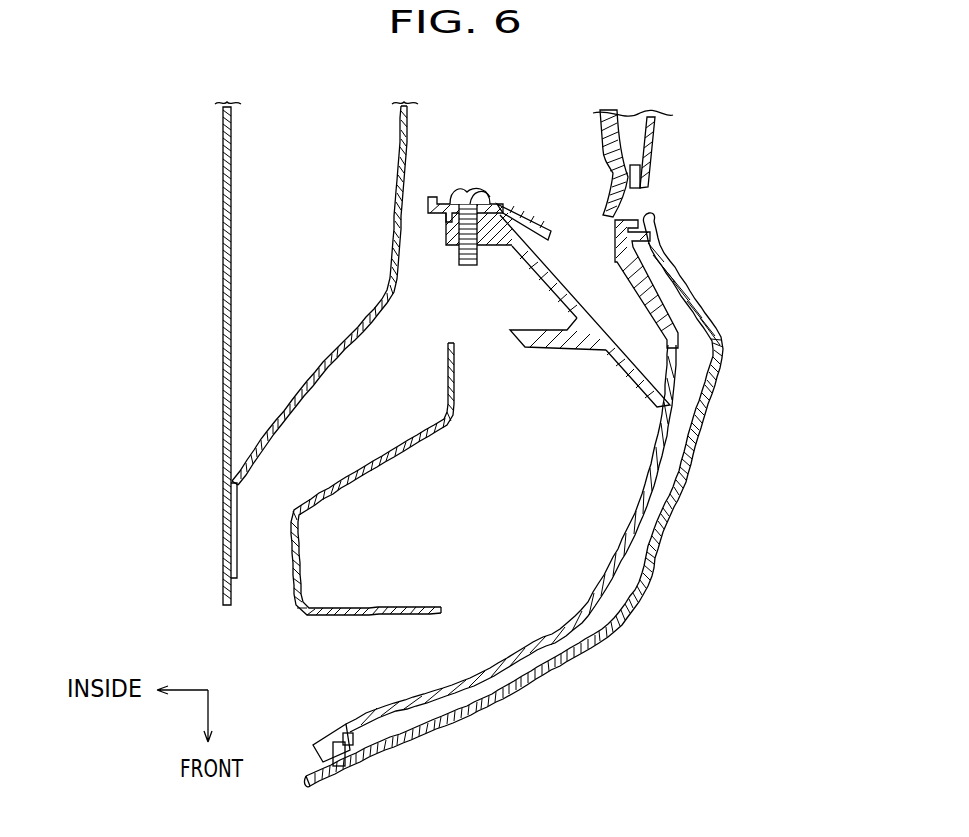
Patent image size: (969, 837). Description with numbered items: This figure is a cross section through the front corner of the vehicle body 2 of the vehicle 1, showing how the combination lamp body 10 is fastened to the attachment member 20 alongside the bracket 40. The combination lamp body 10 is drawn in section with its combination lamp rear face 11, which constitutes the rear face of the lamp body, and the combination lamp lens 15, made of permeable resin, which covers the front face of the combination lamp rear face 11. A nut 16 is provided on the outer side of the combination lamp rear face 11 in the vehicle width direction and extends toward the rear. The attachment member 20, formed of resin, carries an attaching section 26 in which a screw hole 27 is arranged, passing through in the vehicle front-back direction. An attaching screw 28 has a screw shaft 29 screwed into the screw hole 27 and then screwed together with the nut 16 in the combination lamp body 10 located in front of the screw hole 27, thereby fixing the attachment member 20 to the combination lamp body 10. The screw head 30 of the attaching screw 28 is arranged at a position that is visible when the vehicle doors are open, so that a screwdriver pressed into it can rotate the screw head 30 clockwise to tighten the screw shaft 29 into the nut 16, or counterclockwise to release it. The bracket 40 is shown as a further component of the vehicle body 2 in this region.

The vehicle 1 is at (705, 460).
The vehicle body 2 is at (231, 585).
The combination lamp body 10 is at (583, 655).
The combination lamp rear face 11 is at (645, 487).
The combination lamp lens 15 is at (530, 693).
The nut 16 is at (481, 243).
The attachment member 20 is at (558, 240).
The attaching section 26 is at (444, 198).
The screw hole 27 is at (483, 203).
The attaching screw 28 is at (481, 192).
The screw shaft 29 is at (457, 258).
The screw head 30 is at (469, 188).
The bracket 40 is at (367, 607).